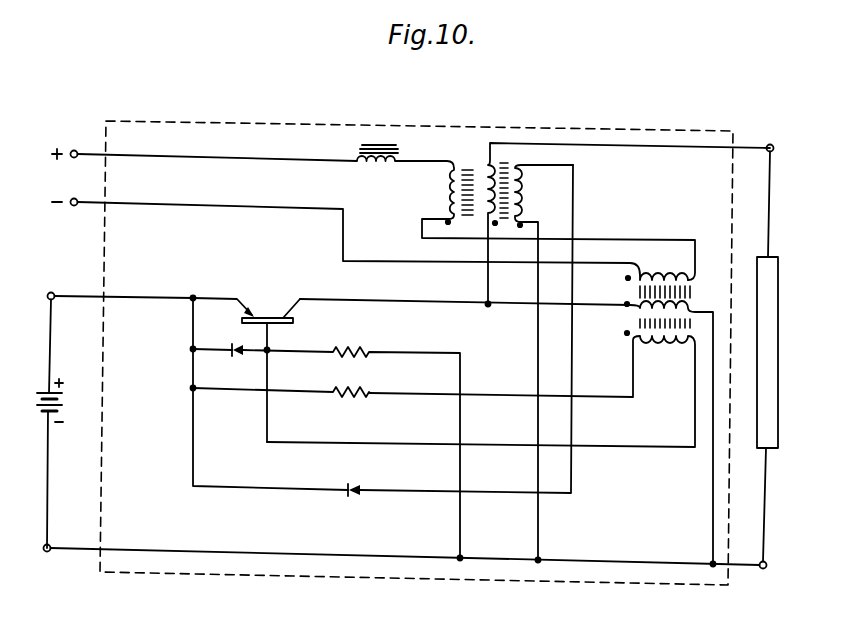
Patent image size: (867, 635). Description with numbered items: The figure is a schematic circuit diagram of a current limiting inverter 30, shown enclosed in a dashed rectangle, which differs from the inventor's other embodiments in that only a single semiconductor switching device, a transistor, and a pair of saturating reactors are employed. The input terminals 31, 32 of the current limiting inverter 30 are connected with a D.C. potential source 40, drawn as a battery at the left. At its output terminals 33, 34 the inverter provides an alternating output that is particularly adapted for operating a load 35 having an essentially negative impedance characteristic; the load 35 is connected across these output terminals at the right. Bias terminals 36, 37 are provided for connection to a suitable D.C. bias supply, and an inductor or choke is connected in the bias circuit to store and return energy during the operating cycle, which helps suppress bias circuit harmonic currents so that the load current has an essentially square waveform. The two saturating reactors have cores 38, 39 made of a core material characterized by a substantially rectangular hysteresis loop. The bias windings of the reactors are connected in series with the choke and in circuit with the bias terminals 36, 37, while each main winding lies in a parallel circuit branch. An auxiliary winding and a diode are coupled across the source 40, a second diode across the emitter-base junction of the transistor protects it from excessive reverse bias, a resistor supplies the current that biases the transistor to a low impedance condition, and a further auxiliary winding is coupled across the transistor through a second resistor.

The current limiting inverter 30 is at (692, 190).
The input terminal 31 is at (50, 292).
The input terminal 32 is at (45, 552).
The output terminal 33 is at (772, 145).
The output terminal 34 is at (763, 569).
The load 35 is at (772, 262).
The bias terminal 36 is at (74, 150).
The bias terminal 37 is at (74, 206).
The core 38 is at (467, 168).
The core 39 is at (695, 292).
The D.C. potential source 40 is at (47, 390).